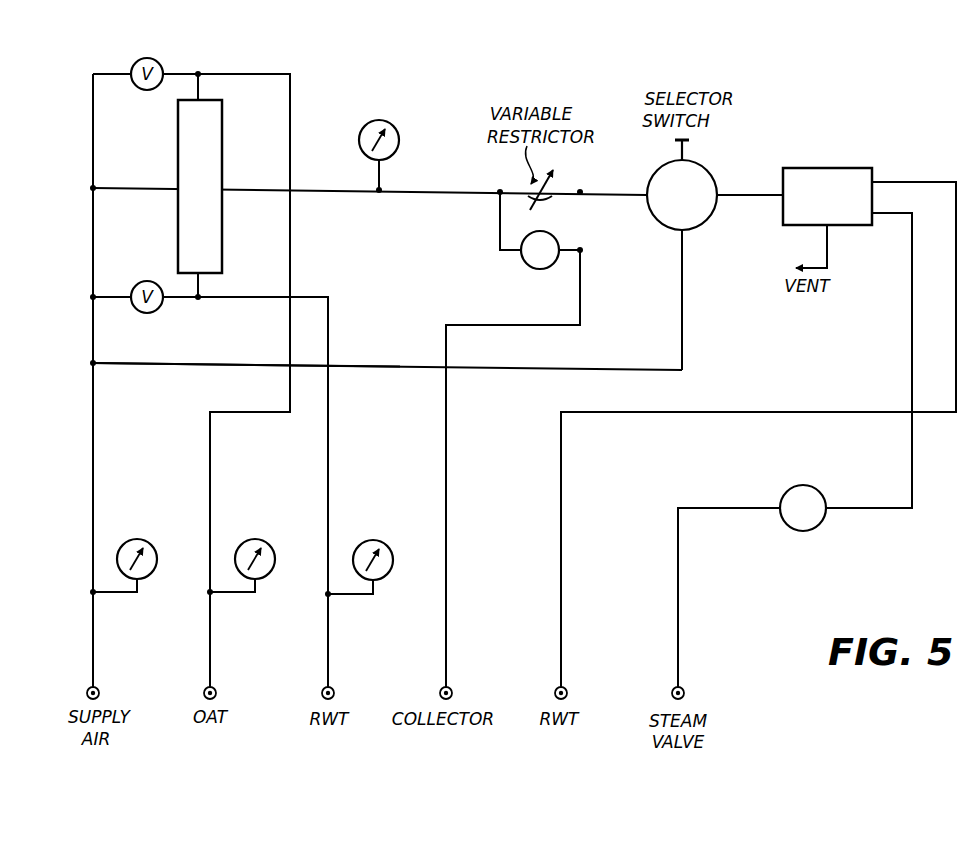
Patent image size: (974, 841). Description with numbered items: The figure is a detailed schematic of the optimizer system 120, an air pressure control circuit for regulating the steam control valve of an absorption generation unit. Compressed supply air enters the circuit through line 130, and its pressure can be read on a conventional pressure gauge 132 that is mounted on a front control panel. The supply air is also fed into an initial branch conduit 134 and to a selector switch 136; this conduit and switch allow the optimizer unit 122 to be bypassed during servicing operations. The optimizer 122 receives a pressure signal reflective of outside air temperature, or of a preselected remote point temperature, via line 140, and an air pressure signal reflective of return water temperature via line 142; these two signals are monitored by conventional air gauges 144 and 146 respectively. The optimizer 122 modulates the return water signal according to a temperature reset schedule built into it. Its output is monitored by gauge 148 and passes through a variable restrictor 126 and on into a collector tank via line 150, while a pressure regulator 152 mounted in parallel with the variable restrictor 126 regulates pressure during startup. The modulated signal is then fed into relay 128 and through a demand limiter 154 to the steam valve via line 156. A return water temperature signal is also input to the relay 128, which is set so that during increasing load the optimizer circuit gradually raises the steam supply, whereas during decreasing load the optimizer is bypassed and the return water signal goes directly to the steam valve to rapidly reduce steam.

The optimizer system 120 is at (772, 112).
The optimizer unit 122 is at (178, 100).
The variable restrictor 126 is at (556, 182).
The relay 128 is at (875, 170).
The line 130 is at (90, 625).
The pressure gauge 132 is at (152, 545).
The initial branch conduit 134 is at (186, 365).
The selector switch 136 is at (700, 231).
The line 140 is at (290, 248).
The line 142 is at (329, 492).
The air gauge 144 is at (297, 522).
The air gauge 146 is at (380, 542).
The gauge 148 is at (392, 124).
The line 150 is at (467, 569).
The pressure regulator 152 is at (540, 270).
The demand limiter 154 is at (823, 526).
The line 156 is at (710, 509).